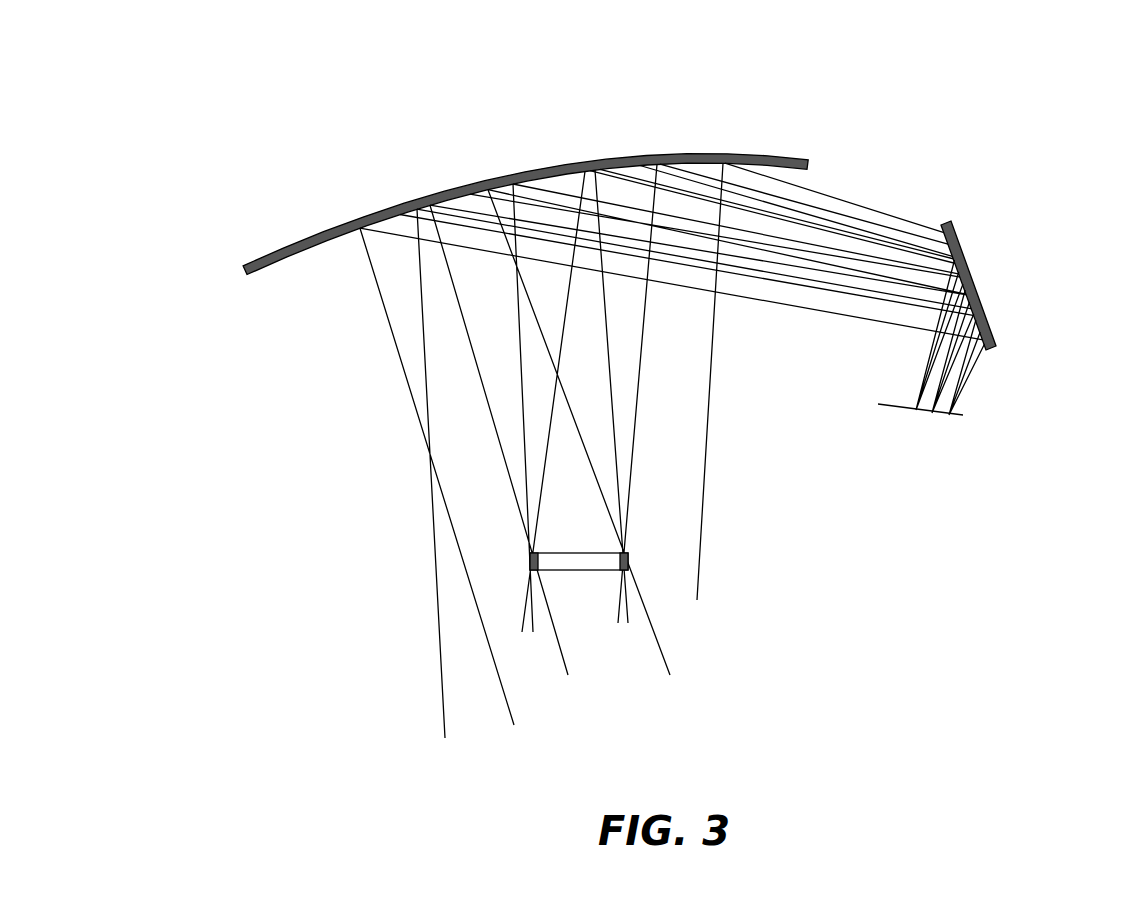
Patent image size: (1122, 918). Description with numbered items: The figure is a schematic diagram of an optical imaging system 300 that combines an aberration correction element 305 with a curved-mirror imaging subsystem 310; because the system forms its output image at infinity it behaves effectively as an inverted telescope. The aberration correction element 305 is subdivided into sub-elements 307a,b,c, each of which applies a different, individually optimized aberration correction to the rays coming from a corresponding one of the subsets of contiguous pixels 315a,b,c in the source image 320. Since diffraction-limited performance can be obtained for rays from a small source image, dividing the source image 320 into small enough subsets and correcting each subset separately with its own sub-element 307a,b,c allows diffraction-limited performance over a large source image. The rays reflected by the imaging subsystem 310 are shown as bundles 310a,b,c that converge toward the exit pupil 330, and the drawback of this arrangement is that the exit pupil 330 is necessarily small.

The optical imaging system 300 is at (620, 21).
The aberration correction element 305 is at (957, 218).
The sub-elements 307a,b,c is at (995, 318).
The imaging subsystem 310 is at (298, 227).
The reflected light beams to detector 310a,b,c is at (493, 381).
The subsets of contiguous pixels 315a,b,c is at (915, 416).
The source image 320 is at (963, 415).
The exit pupil 330 is at (596, 566).